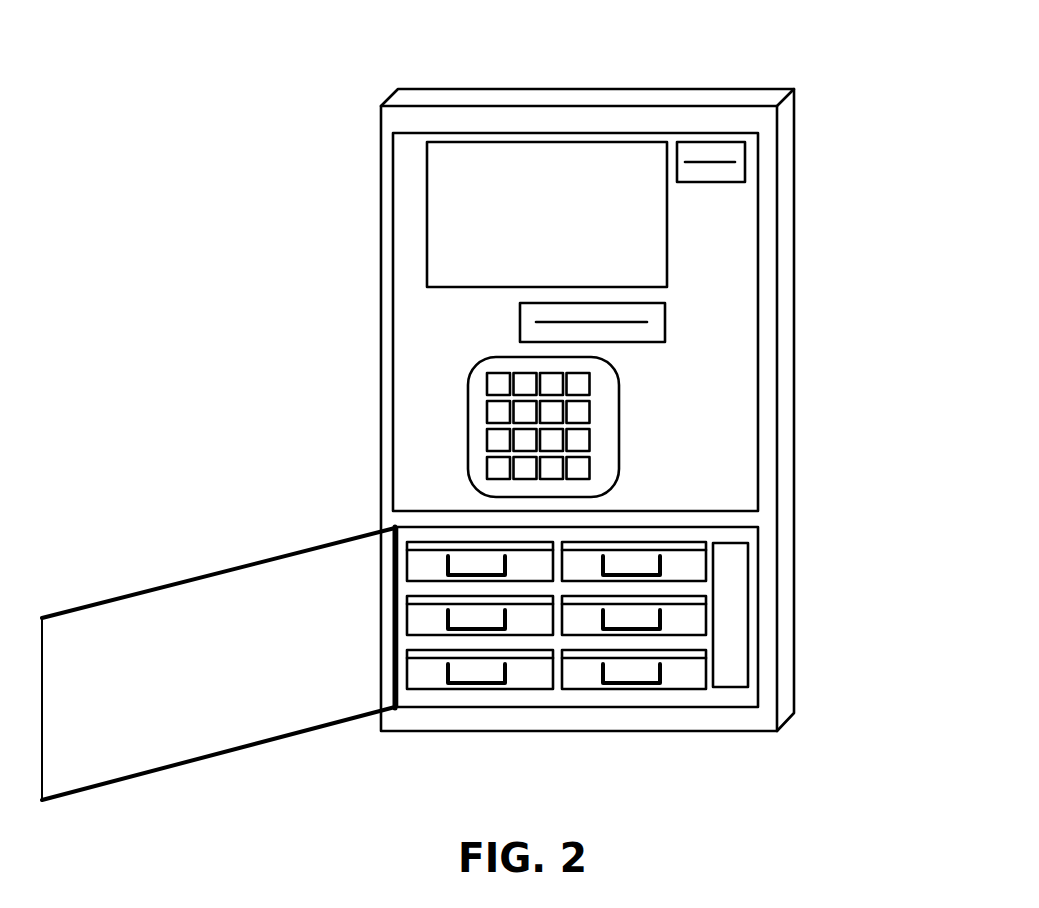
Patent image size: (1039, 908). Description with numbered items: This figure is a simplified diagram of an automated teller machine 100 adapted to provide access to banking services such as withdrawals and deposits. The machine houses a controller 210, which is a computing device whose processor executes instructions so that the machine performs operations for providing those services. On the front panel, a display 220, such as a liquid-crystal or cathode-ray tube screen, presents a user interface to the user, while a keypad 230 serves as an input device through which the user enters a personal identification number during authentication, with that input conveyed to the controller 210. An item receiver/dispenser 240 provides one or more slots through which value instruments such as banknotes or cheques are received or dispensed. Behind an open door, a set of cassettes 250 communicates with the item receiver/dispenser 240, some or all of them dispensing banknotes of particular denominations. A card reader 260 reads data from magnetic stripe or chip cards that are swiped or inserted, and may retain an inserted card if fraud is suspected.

The kiosk apparatus 100 is at (757, 95).
The controller 210 is at (733, 555).
The display 220 is at (650, 265).
The keypad 230 is at (608, 448).
The item receiver/dispenser 240 is at (656, 312).
The cassettes 250 is at (423, 563).
The card reader 260 is at (731, 170).